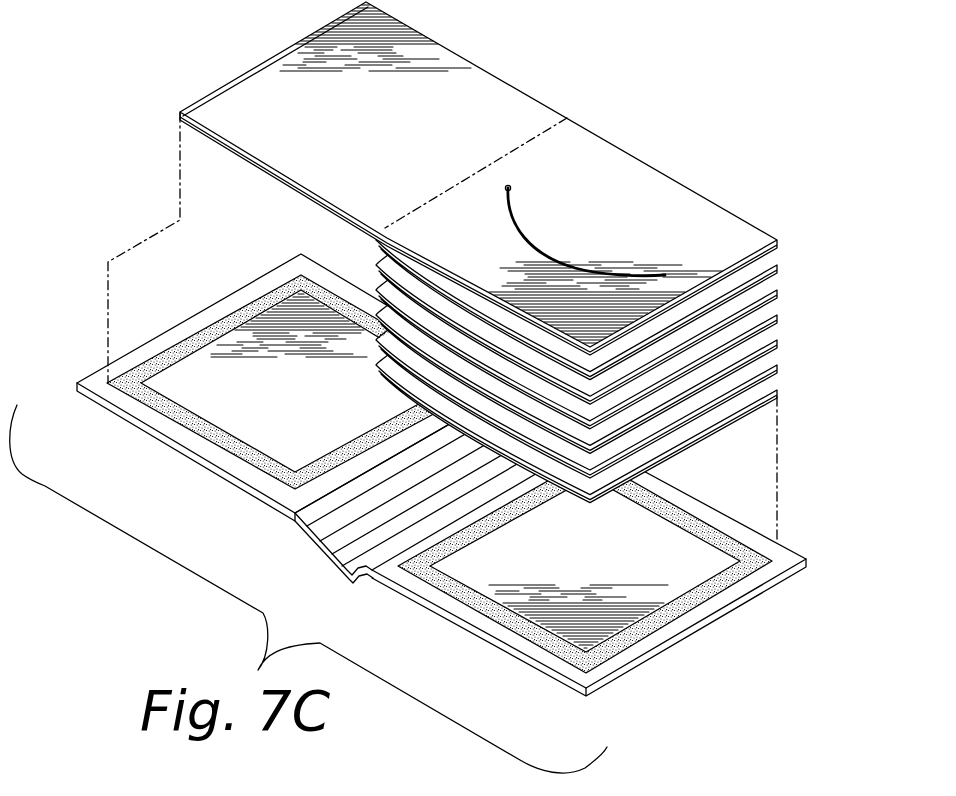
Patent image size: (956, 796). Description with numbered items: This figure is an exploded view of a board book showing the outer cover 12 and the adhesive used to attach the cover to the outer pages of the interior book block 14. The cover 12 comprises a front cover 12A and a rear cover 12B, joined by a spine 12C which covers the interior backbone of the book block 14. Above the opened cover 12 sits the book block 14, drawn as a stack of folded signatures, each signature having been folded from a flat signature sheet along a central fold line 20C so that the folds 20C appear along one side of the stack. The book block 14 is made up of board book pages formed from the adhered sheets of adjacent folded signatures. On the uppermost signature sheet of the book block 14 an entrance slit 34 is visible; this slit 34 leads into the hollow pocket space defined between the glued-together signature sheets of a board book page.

The outer cover 12 is at (408, 513).
The front cover 12A is at (163, 442).
The rear cover 12B is at (483, 645).
The spine 12C is at (327, 543).
The book block 14 is at (442, 272).
The fold line 20C is at (377, 241).
The entrance slit 34 is at (513, 210).